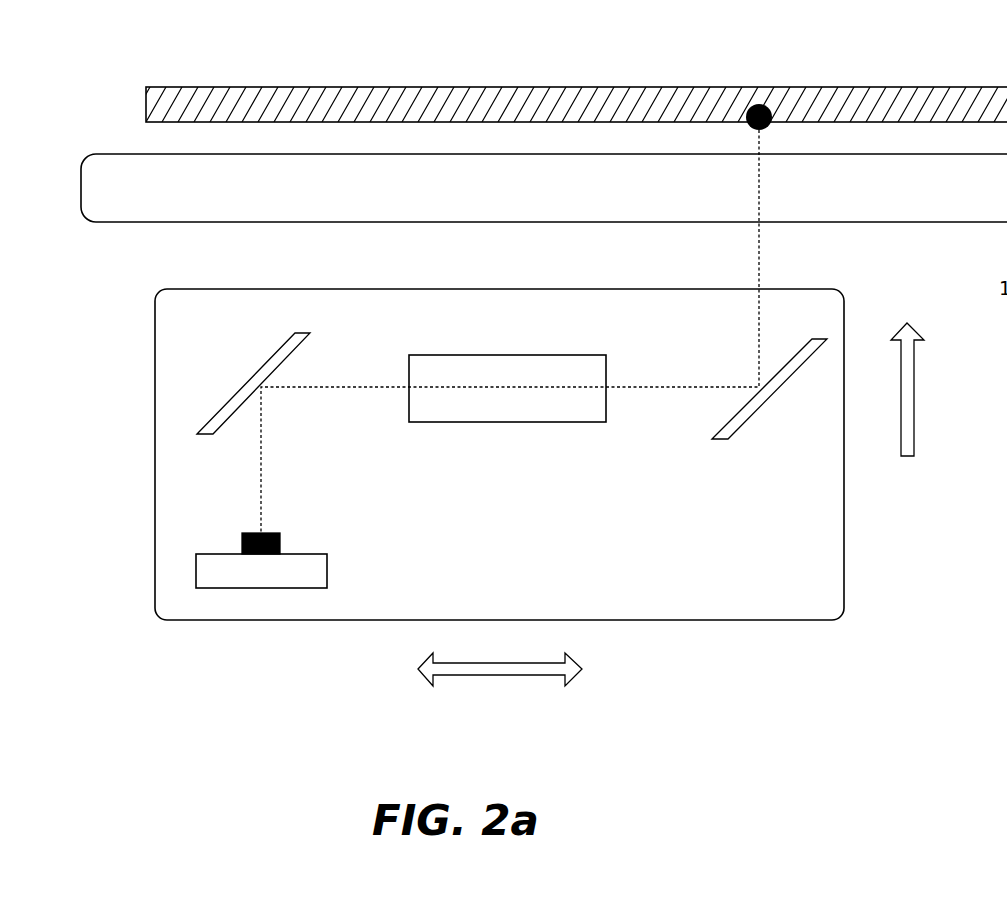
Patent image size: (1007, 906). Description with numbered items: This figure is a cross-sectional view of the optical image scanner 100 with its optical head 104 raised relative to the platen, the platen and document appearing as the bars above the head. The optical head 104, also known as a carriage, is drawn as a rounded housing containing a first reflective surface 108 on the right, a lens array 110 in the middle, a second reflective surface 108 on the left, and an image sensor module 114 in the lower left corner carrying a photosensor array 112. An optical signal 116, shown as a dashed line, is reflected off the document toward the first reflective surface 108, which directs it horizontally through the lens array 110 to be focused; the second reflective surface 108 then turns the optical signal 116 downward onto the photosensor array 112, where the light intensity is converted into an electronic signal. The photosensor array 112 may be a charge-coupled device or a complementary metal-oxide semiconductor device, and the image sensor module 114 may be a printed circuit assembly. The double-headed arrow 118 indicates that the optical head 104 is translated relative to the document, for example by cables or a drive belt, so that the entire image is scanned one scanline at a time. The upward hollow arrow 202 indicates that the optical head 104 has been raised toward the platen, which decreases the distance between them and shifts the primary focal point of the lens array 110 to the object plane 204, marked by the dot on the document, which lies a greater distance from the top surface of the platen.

The optical image scanner 100 is at (828, 686).
The optical head 104 is at (844, 515).
The reflective surface 108 is at (232, 395).
The lens array 110 is at (549, 422).
The photosensor array 112 is at (282, 545).
The image sensor module 114 is at (355, 571).
The optical signal 116 is at (780, 254).
The translation of optical head 118 is at (500, 675).
The raising of optical head 202 is at (914, 393).
The object plane 204 is at (745, 124).